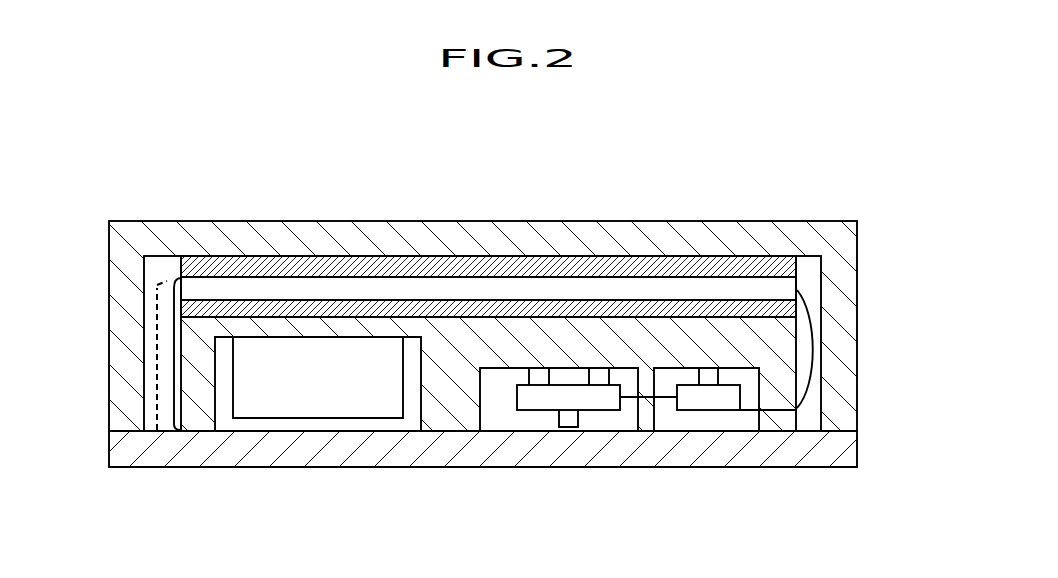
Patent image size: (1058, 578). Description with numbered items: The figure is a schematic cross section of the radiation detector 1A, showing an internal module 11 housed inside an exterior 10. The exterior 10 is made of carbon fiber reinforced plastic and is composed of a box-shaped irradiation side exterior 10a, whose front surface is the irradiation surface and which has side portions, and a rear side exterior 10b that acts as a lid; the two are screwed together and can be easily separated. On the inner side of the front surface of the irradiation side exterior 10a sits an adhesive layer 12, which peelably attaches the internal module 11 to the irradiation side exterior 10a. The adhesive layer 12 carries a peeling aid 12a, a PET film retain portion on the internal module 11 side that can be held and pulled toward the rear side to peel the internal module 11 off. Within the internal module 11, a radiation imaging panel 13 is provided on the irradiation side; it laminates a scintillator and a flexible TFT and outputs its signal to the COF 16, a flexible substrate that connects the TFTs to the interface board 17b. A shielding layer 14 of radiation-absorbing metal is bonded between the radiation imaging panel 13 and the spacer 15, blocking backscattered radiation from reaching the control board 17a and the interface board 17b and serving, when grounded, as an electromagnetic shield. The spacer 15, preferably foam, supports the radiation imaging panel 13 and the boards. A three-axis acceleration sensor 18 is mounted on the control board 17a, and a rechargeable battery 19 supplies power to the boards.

The radiation detector 1A is at (624, 163).
The exterior 10 is at (534, 320).
The irradiation side exterior 10a is at (727, 187).
The rear side exterior 10b is at (843, 450).
The internal module 11 is at (171, 354).
The adhesive layer 12 is at (778, 262).
The peeling aid 12a is at (155, 397).
The radiation imaging panel 13 is at (782, 288).
The shielding layer 14 is at (793, 310).
The spacer 15 is at (783, 347).
The COF 16 is at (812, 381).
The control board 17a is at (602, 398).
The interface board 17b is at (703, 398).
The sensor 18 is at (565, 424).
The rechargeable battery 19 is at (322, 397).